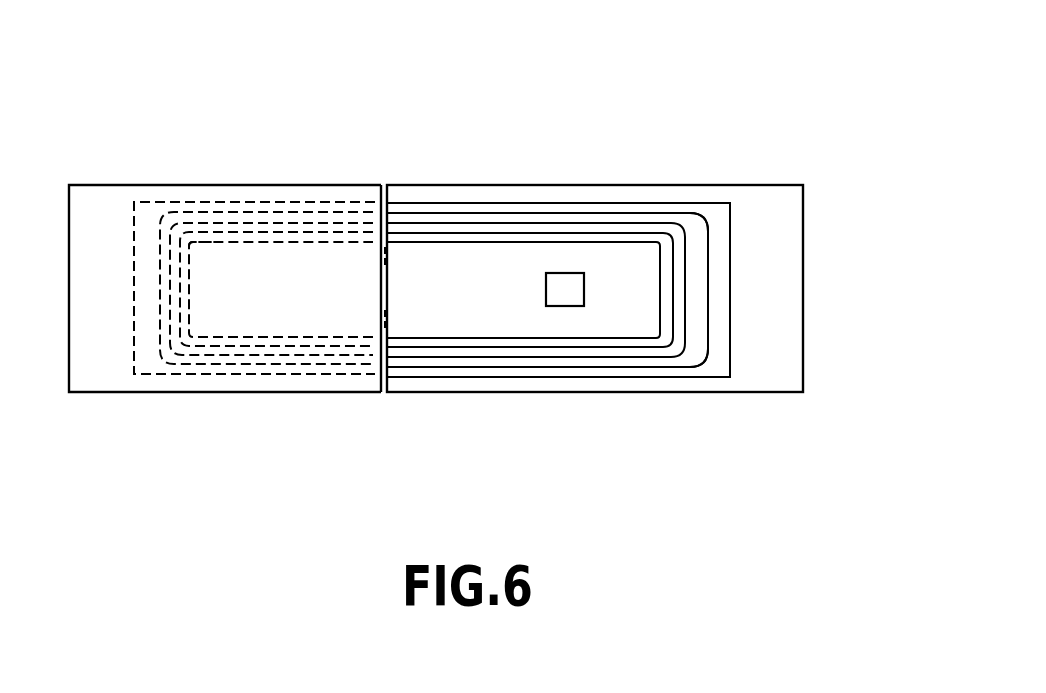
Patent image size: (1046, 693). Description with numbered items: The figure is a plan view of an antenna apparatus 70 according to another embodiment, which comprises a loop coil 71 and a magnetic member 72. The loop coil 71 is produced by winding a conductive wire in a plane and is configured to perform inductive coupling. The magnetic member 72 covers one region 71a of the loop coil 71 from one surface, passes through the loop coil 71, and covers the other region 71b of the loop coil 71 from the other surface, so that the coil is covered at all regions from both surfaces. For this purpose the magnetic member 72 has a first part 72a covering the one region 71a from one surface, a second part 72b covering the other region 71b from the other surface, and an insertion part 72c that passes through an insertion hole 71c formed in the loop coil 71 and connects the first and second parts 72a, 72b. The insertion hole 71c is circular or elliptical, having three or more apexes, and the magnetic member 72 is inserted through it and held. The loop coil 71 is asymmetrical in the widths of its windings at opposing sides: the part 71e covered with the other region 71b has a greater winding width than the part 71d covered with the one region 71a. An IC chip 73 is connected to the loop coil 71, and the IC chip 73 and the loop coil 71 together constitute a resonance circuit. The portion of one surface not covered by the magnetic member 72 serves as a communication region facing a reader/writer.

The antenna apparatus 70 is at (520, 107).
The loop coil 71 is at (409, 223).
The one region of the loop coil 71a is at (294, 257).
The other region of the loop coil 71b is at (589, 256).
The insertion hole 71c is at (408, 297).
The part covered with the region 71a 71d is at (183, 268).
The part covered with the region 71b 71e is at (695, 270).
The magnetic member 72 is at (285, 323).
The first part of the magnetic member 72a is at (112, 337).
The second part of the magnetic member 72b is at (772, 307).
The insertion part of the magnetic member 72c is at (358, 298).
The IC chip 73 is at (565, 307).